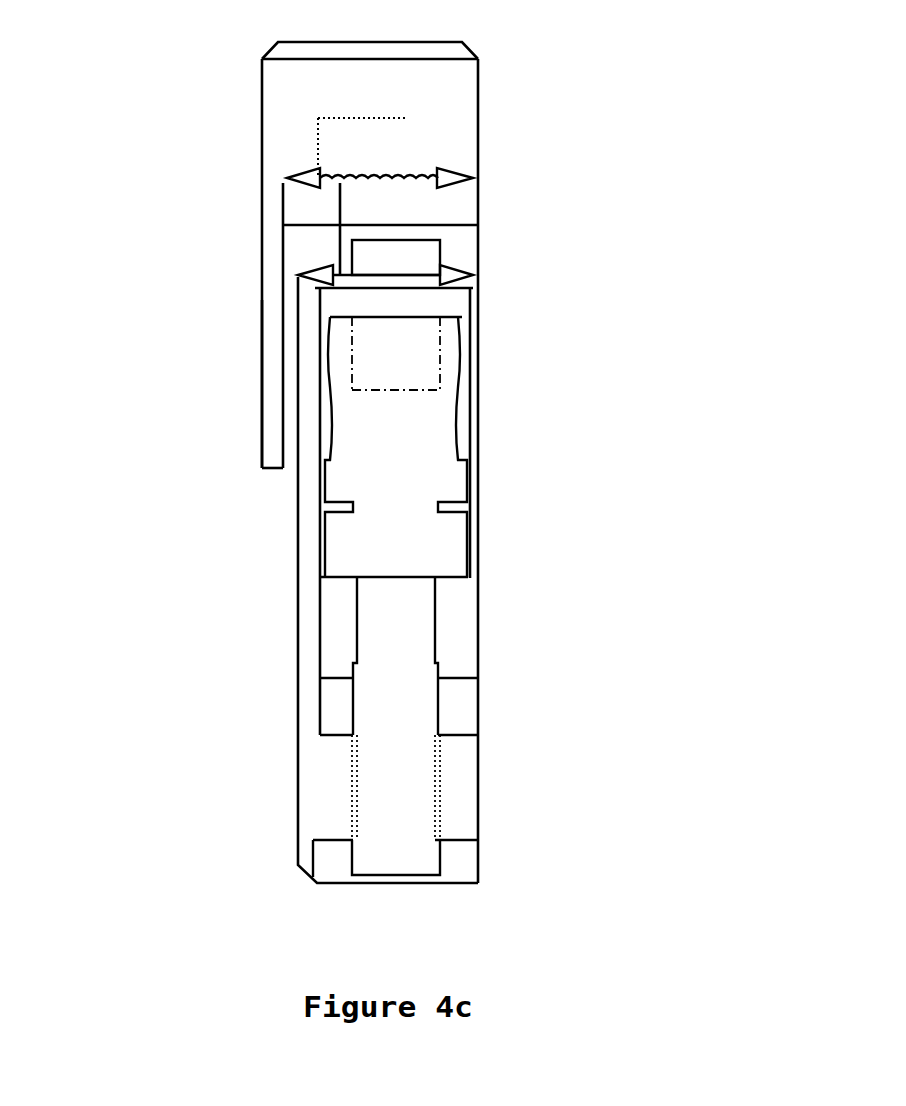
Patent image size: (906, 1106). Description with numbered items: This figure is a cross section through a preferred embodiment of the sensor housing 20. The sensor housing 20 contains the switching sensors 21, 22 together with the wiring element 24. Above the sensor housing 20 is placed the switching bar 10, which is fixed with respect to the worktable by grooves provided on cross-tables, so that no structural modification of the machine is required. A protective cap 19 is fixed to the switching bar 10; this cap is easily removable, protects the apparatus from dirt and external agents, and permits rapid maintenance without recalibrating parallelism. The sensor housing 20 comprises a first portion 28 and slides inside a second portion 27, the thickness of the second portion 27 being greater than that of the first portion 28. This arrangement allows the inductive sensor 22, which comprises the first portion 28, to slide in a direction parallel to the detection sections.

The switching bar 10 is at (453, 90).
The protective cap 19 is at (278, 107).
The sensor housing 20 is at (458, 633).
The switching sensor 21 is at (392, 863).
The inductive sensor 22 is at (380, 257).
The wiring element 24 is at (327, 480).
The second portion 27 is at (373, 185).
The first portion 28 is at (400, 282).